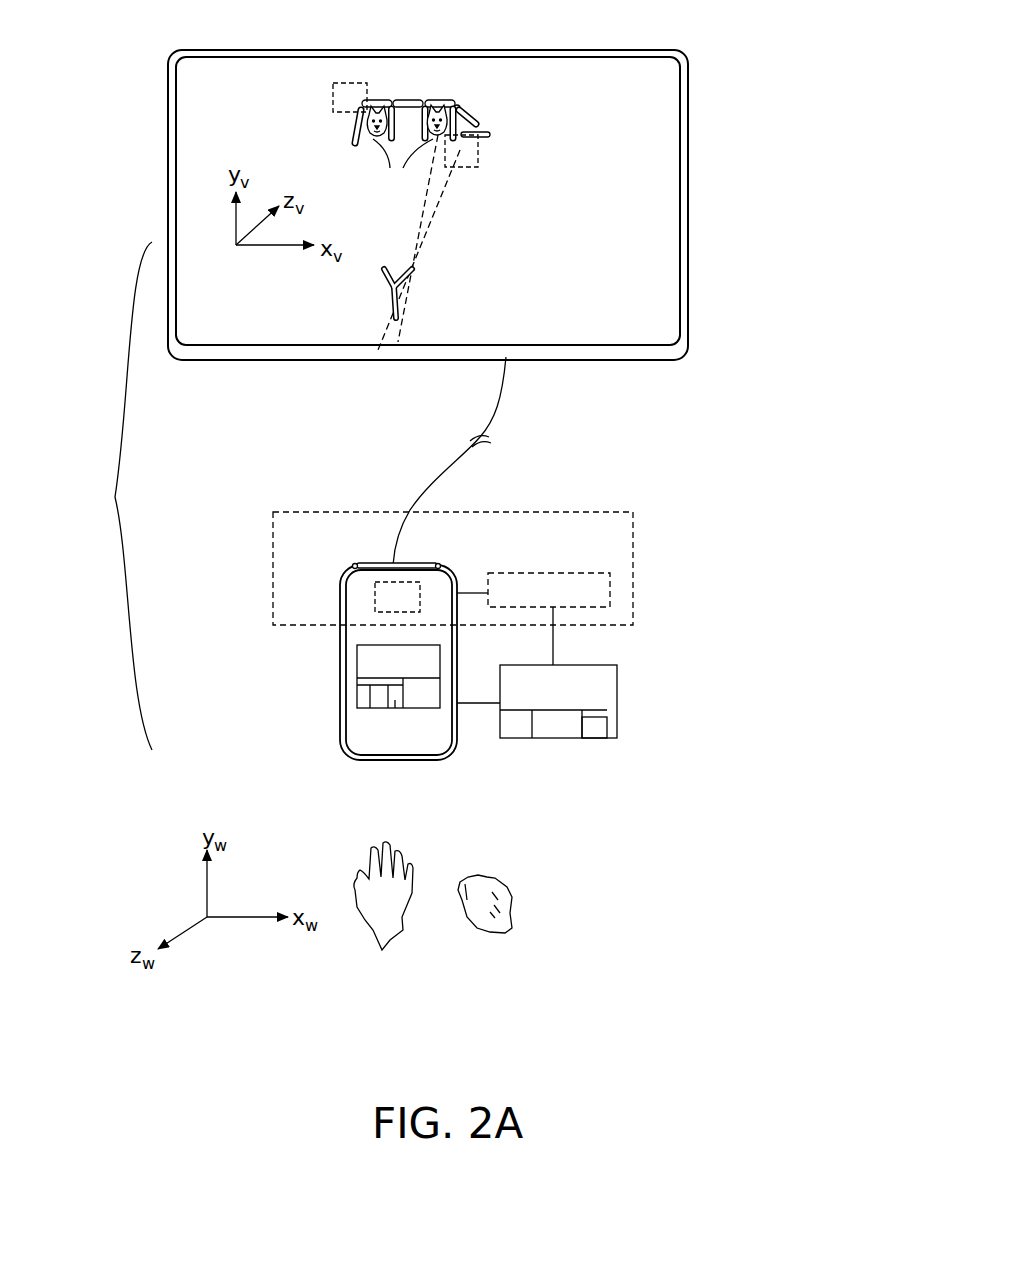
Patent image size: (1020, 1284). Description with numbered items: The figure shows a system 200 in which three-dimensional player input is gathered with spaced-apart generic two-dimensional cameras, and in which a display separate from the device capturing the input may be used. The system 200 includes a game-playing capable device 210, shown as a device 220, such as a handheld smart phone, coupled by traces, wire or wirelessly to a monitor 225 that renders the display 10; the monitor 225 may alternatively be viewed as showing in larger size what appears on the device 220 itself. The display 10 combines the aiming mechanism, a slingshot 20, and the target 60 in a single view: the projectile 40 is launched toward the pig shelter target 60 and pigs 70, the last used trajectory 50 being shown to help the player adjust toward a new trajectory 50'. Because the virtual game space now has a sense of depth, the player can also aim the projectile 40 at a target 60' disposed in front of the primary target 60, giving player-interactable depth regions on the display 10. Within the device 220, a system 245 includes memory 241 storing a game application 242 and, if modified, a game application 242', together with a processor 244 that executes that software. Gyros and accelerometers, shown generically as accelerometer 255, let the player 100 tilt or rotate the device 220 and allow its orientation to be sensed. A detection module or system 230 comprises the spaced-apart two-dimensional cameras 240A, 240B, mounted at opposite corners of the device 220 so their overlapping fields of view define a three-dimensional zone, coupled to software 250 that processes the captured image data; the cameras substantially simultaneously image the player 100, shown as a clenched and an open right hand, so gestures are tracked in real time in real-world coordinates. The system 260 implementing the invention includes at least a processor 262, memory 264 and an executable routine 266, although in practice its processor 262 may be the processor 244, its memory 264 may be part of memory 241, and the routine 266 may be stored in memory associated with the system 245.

The display 10 is at (258, 70).
The slingshot 20 is at (425, 300).
The projectile 40 is at (462, 98).
The last used trajectory 50 is at (434, 250).
The desired trajectory 50' is at (400, 238).
The target 60 is at (493, 103).
The target 60' is at (483, 164).
The pigs 70 is at (403, 169).
The player 100 is at (475, 832).
The system 200 is at (777, 470).
The game-playing capable device 210 is at (105, 496).
The device 220 is at (417, 743).
The monitor 225 is at (143, 212).
The system 230 is at (355, 512).
The two-dimensional camera 240A is at (357, 565).
The two-dimensional camera 240B is at (437, 565).
The memory 241 is at (393, 702).
The game application 242 is at (384, 716).
The modified game application 242' is at (345, 682).
The processor 244 is at (422, 693).
The system 245 is at (398, 676).
The software 250 is at (533, 590).
The accelerometer 255 is at (398, 597).
The system 260 is at (537, 672).
The processor 262 is at (522, 730).
The memory 264 is at (547, 730).
The executable routine 266 is at (602, 730).